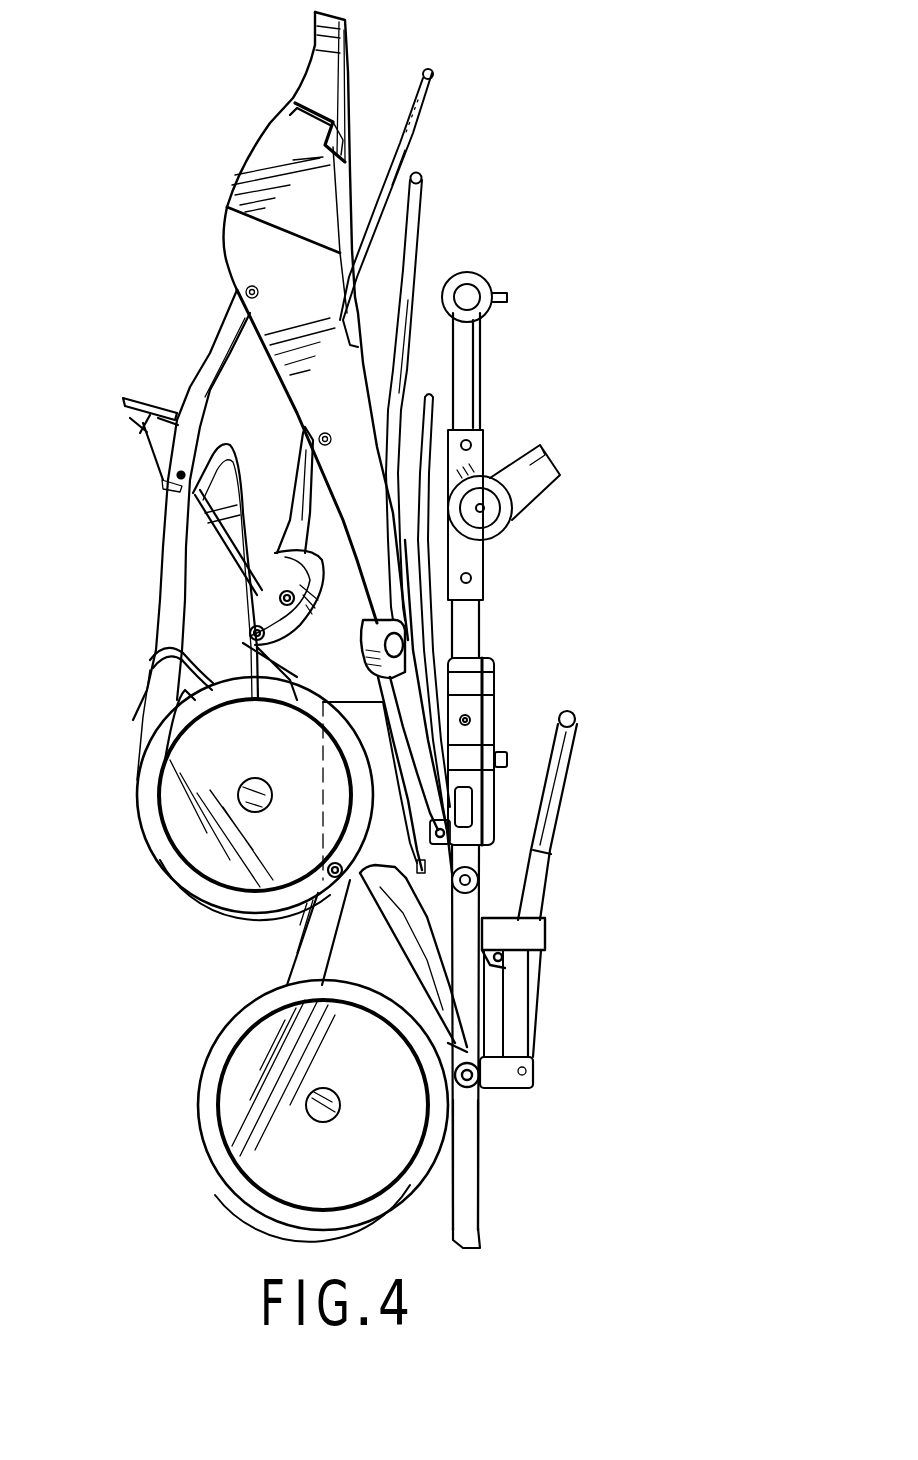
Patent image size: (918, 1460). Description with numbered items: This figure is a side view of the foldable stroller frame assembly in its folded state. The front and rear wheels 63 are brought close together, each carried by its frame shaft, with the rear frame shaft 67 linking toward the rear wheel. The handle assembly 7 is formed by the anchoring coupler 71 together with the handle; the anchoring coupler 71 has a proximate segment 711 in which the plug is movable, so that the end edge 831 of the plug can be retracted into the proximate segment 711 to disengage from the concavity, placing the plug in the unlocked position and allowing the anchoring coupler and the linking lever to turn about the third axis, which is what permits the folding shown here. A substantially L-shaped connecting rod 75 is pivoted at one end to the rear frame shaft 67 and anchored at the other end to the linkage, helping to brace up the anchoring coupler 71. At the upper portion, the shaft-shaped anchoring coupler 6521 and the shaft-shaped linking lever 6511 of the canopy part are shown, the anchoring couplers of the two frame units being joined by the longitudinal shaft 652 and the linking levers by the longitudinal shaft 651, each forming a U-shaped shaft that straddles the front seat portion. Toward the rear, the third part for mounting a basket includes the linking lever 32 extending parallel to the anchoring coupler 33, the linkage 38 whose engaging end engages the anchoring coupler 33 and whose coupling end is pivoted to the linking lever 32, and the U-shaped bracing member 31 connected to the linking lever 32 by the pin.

The handle assembly 7 is at (570, 600).
The bracing member 31 is at (572, 730).
The linking lever 32 is at (523, 1025).
The anchoring coupler 33 is at (493, 988).
The linkage 38 is at (533, 1072).
The wheels 63 is at (185, 838).
The rear frame shaft 67 is at (318, 942).
The anchoring coupler 71 is at (466, 912).
The connecting rod 75 is at (427, 960).
The longitudinal shaft 651 is at (436, 77).
The longitudinal shaft 652 is at (424, 192).
The proximate segment 711 is at (471, 1188).
The end edge 831 is at (478, 1241).
The linking lever 6511 is at (410, 133).
The anchoring coupler 6521 is at (414, 268).